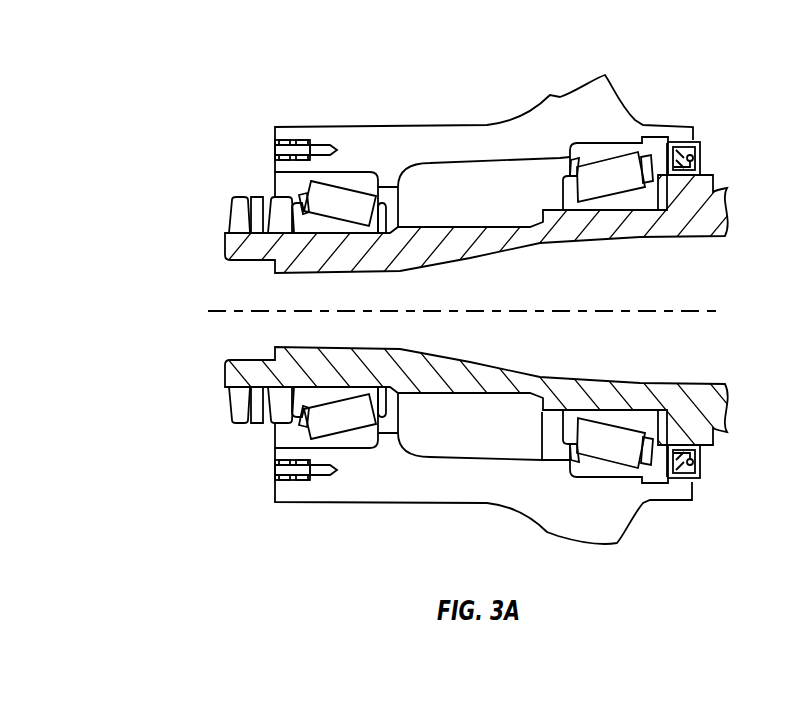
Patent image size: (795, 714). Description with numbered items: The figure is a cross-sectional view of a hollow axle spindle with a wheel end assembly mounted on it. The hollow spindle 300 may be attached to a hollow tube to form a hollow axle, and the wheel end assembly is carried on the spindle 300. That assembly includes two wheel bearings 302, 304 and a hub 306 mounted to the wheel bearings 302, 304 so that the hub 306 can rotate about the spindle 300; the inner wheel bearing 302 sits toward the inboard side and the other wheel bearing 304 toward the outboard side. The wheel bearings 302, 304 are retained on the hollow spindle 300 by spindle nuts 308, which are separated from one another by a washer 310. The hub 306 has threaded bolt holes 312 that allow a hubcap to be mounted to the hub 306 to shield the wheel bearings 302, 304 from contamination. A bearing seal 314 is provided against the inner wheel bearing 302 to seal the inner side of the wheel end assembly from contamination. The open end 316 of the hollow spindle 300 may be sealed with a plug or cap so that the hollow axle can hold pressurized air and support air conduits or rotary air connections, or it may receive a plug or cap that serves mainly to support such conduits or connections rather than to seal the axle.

The hollow spindle 300 is at (578, 380).
The inner wheel bearing 302 is at (625, 143).
The wheel bearing 304 is at (362, 172).
The hub 306 is at (552, 107).
The spindle nut 308 is at (272, 197).
The washer 310 is at (252, 197).
The threaded bolt hole 312 is at (293, 140).
The bearing seal 314 is at (698, 153).
The open end 316 is at (210, 331).